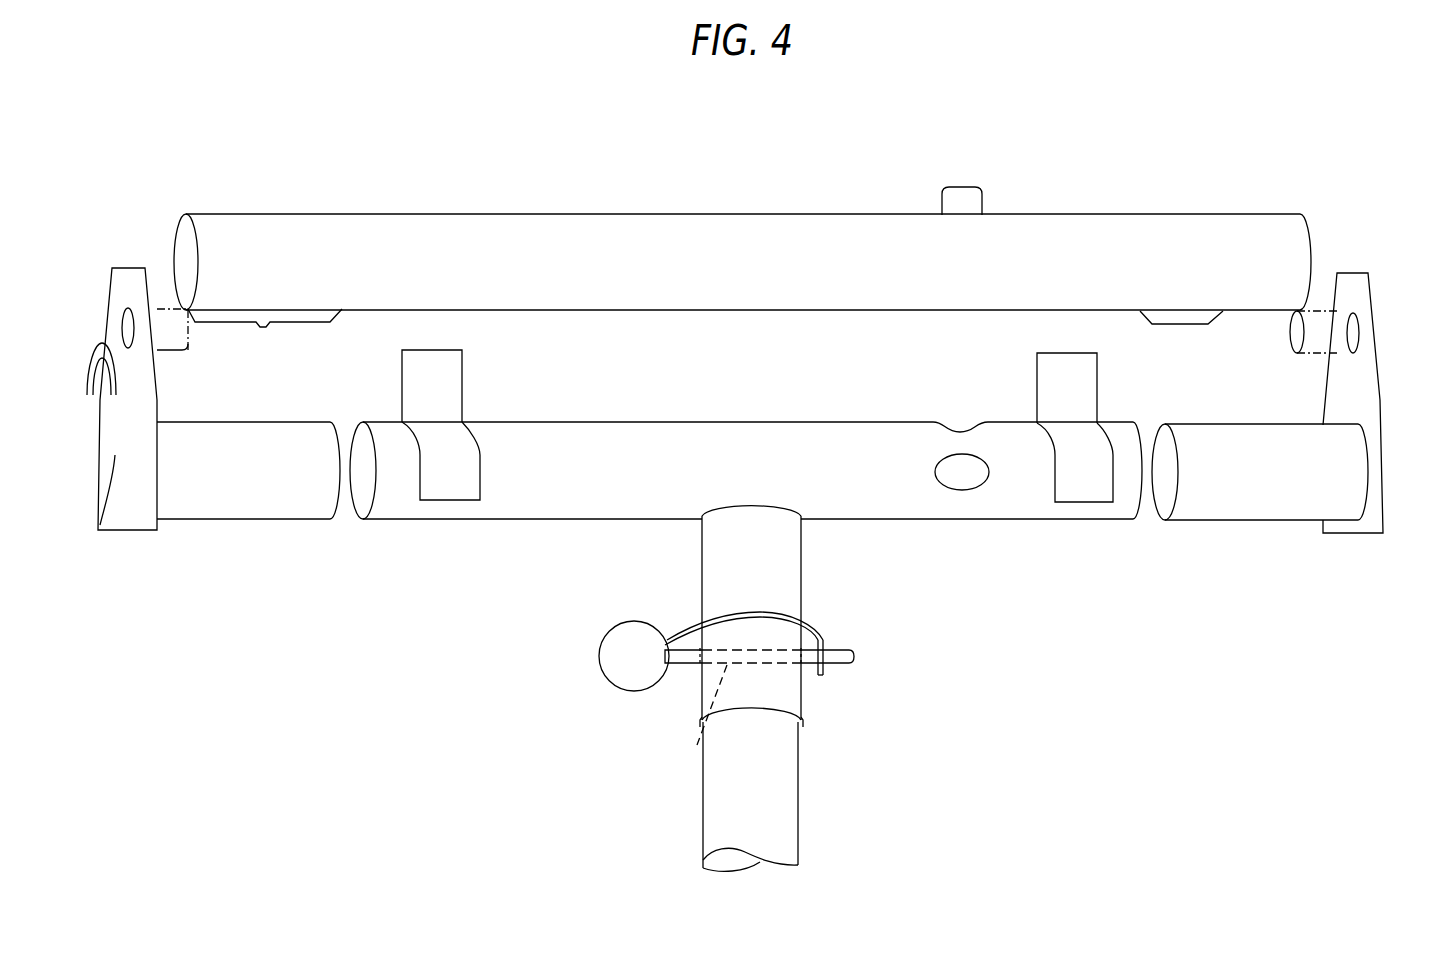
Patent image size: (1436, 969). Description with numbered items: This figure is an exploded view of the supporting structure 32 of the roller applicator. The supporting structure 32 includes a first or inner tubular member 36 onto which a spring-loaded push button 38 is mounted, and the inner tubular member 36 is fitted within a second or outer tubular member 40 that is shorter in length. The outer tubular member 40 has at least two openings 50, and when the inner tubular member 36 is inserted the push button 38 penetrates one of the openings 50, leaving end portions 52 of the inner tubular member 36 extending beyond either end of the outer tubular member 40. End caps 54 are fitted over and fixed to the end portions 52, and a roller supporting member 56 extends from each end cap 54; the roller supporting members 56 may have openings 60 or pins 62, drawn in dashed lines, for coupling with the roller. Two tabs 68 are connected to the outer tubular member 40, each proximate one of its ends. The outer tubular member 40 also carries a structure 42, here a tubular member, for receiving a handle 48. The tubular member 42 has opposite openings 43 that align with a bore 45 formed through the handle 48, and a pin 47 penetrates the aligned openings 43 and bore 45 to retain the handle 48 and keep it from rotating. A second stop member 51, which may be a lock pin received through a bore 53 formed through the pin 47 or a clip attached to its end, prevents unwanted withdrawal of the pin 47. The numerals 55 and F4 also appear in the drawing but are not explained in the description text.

The supporting structure 32 is at (1247, 575).
The inner tubular member 36 is at (1217, 221).
The spring-loaded push button 38 is at (942, 195).
The outer tubular member 40 is at (550, 497).
The structure for receiving a handle 42 is at (782, 575).
The openings 43 is at (700, 665).
The bore 45 is at (697, 745).
The pin 47 is at (853, 656).
The handle 48 is at (782, 793).
The openings 50 is at (950, 420).
The second stop member 51 is at (827, 637).
The end portions 52 is at (262, 324).
The bore 53 is at (826, 662).
The end caps 54 is at (217, 545).
The retaining clip 55 is at (728, 613).
The roller supporting member 56 is at (98, 530).
The openings 60 is at (128, 328).
The pins 62 is at (168, 352).
The tabs 68 is at (450, 440).
The force direction F4 is at (102, 345).